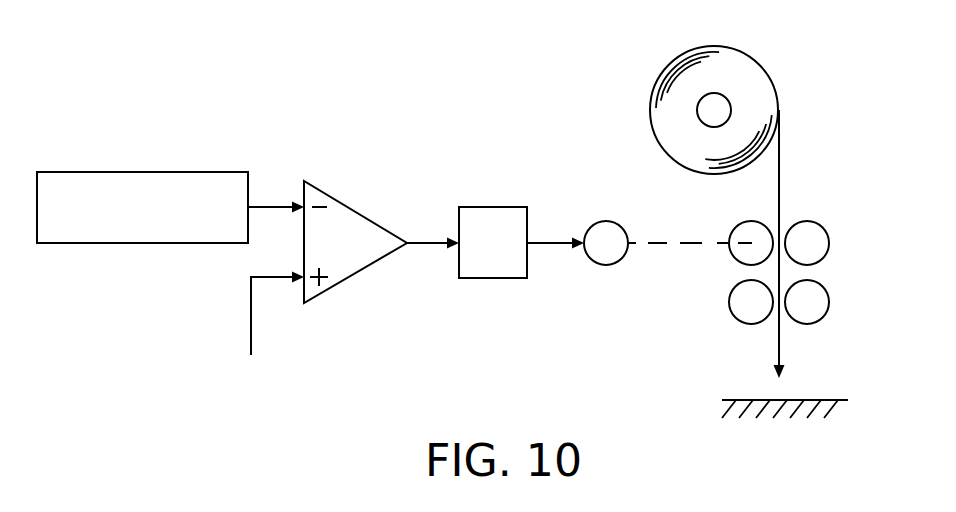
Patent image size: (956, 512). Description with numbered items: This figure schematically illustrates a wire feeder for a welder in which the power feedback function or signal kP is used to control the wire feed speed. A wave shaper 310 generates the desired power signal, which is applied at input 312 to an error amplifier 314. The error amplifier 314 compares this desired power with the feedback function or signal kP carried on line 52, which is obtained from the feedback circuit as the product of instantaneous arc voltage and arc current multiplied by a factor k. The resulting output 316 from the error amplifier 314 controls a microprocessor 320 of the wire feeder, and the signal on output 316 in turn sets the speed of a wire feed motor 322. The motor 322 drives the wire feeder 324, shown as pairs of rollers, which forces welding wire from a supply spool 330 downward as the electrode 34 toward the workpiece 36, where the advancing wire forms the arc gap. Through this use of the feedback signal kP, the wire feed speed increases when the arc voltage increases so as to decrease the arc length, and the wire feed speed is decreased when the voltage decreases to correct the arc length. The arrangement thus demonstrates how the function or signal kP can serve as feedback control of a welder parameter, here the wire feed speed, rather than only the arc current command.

The wave shaper 310 is at (107, 171).
The input 312 is at (270, 203).
The error amplifier 314 is at (352, 208).
The feedback line 52 is at (251, 312).
The output 316 is at (424, 246).
The microprocessor 320 is at (489, 206).
The wire feed motor 322 is at (598, 265).
The wire feeder 324 is at (815, 218).
The spool 330 is at (757, 79).
The electrode 34 is at (786, 375).
The workpiece 36 is at (748, 400).